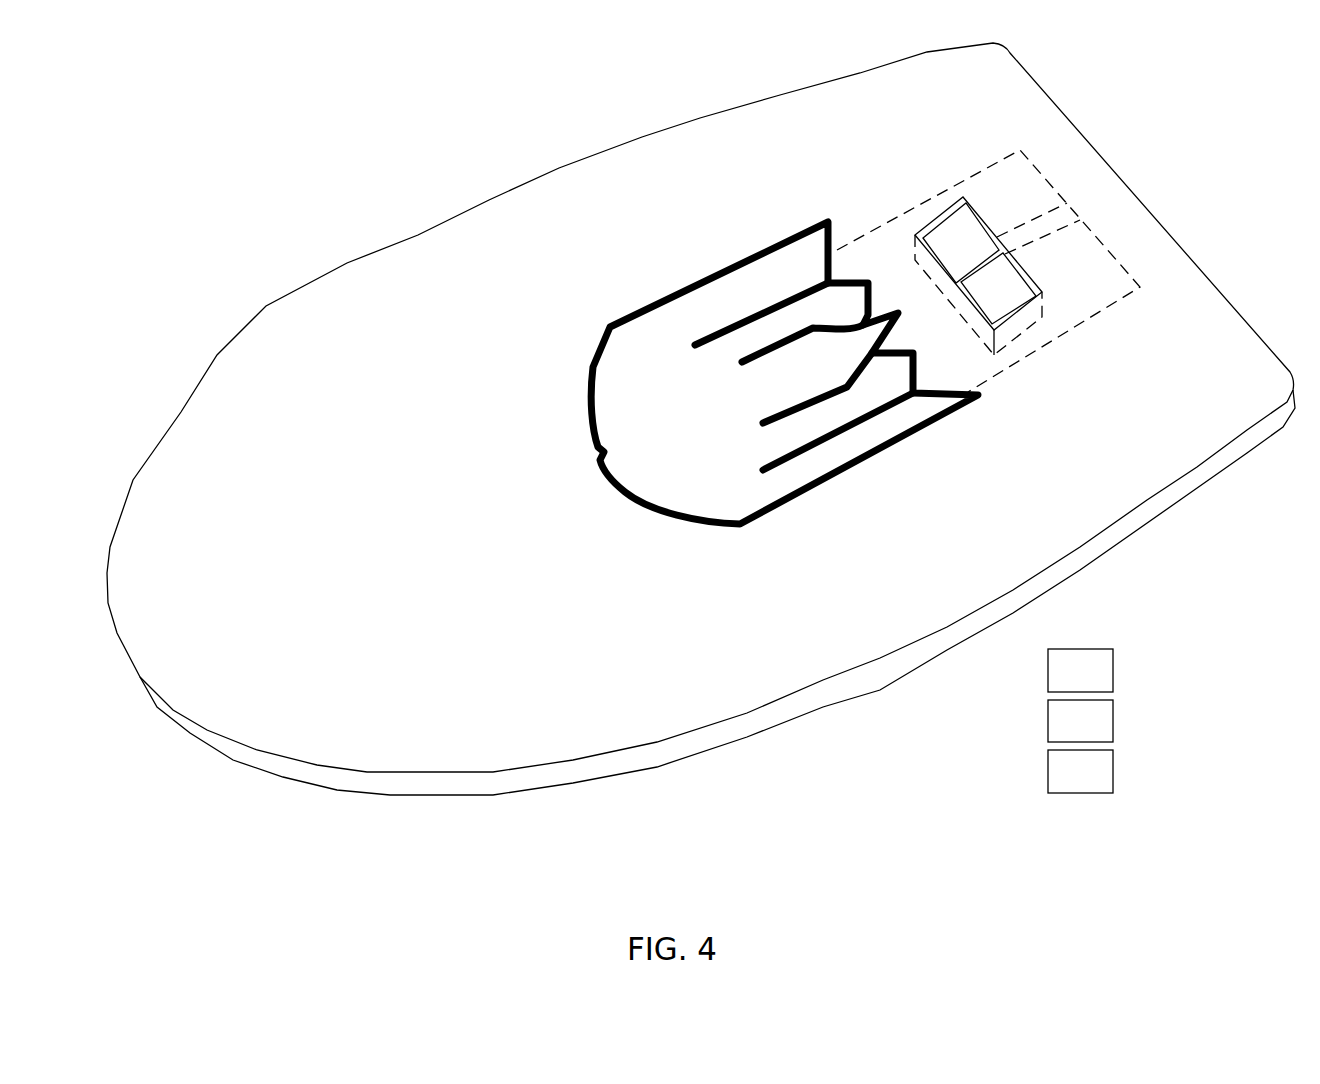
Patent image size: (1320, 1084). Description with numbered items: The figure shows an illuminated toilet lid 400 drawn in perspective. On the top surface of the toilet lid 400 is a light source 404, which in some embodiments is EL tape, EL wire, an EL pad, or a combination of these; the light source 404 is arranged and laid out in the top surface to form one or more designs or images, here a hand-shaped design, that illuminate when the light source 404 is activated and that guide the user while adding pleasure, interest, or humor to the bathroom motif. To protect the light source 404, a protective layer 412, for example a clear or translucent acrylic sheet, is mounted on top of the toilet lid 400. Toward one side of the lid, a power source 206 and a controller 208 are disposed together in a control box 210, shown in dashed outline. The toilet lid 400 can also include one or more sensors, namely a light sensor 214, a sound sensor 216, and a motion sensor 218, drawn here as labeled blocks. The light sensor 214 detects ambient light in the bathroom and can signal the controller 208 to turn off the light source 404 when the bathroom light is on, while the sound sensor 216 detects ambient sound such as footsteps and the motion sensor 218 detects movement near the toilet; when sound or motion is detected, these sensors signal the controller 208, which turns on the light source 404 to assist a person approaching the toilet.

The toilet lid 400 is at (701, 419).
The protective layer 412 is at (657, 160).
The light source 404 is at (590, 402).
The power source 206 is at (977, 252).
The controller 208 is at (1013, 301).
The control box 210 is at (1023, 333).
The light sensor 214 is at (1099, 682).
The sound sensor 216 is at (1099, 733).
The motion sensor 218 is at (1099, 783).